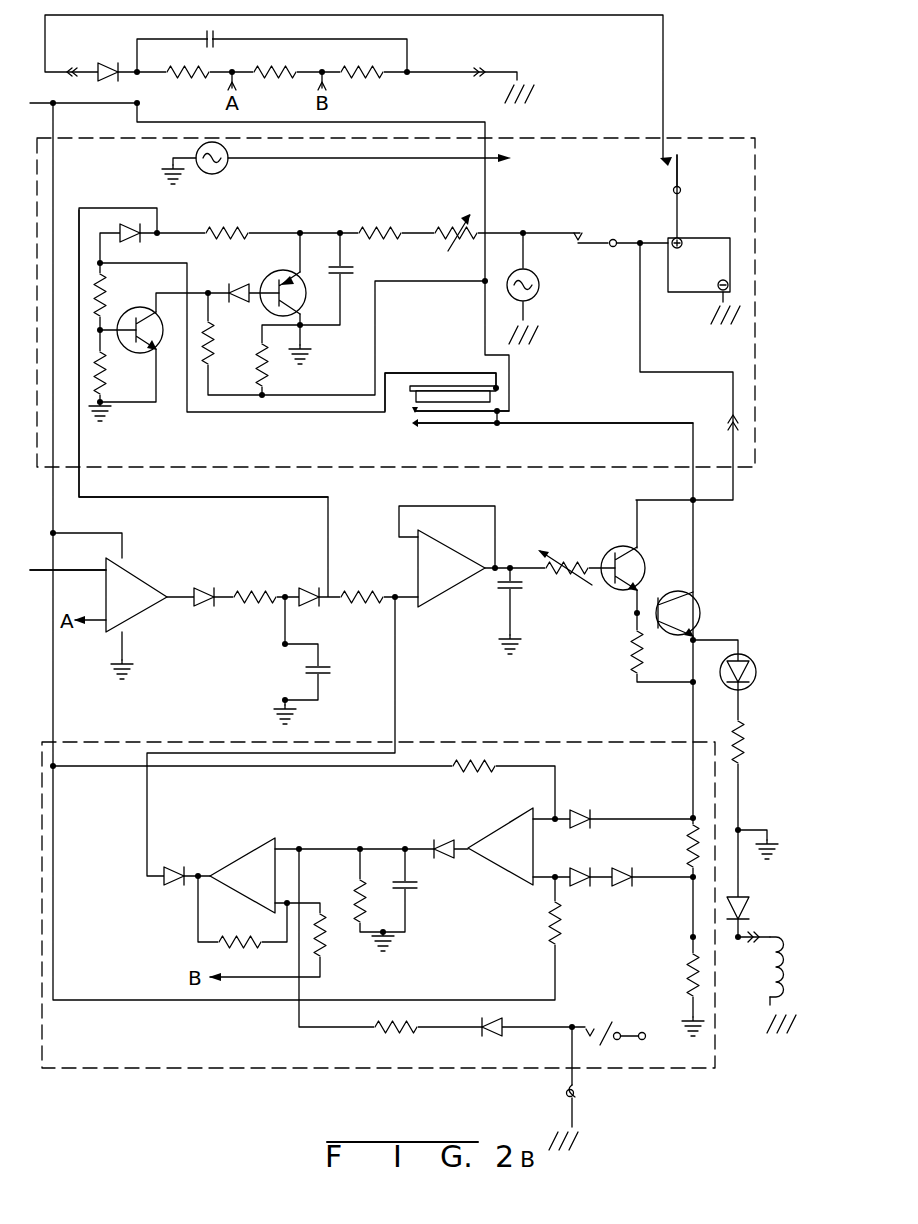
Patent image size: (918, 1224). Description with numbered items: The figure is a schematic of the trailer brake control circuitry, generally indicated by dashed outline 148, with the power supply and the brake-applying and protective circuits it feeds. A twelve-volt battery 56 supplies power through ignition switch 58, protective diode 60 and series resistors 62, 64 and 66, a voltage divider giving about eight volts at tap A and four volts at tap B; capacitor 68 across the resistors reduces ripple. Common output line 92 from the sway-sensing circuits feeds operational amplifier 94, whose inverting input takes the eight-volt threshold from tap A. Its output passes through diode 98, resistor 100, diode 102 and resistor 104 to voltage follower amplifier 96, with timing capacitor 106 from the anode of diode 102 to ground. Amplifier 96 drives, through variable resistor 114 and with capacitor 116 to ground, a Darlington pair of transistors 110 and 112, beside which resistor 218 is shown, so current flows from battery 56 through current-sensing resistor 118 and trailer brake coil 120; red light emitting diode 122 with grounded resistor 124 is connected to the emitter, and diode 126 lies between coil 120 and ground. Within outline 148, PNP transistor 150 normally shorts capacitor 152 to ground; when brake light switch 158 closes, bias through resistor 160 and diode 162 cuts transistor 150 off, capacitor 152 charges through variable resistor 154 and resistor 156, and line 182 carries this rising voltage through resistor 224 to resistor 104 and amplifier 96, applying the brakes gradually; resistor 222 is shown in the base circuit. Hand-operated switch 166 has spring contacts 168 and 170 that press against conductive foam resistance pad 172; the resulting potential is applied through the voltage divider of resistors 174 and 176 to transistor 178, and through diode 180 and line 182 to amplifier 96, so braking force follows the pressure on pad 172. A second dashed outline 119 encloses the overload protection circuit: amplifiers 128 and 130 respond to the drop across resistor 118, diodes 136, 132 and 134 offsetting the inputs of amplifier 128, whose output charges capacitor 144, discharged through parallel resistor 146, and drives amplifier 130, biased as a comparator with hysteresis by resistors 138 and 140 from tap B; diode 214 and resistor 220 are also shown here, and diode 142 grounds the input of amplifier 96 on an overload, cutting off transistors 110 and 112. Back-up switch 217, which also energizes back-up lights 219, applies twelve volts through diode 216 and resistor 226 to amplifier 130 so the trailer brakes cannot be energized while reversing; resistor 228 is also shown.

The battery 56 is at (735, 238).
The ignition switch 58 is at (665, 163).
The diode 60 is at (110, 62).
The resistor 62 is at (184, 64).
The resistor 64 is at (274, 65).
The resistor 66 is at (378, 77).
The capacitor 68 is at (216, 34).
The common output line 92 is at (60, 569).
The operational amplifier 94 is at (130, 613).
The operational amplifier 96 is at (455, 552).
The diode 98 is at (212, 585).
The resistor 100 is at (253, 585).
The diode 102 is at (310, 585).
The resistor 104 is at (362, 586).
The timing capacitor 106 is at (331, 671).
The transistor 110 is at (641, 559).
The transistor 112 is at (690, 595).
The variable resistor 114 is at (563, 563).
The capacitor 116 is at (521, 588).
The current-sensing resistor 118 is at (688, 846).
The control circuit 119 is at (690, 1069).
The braking coil 120 is at (774, 963).
The light emitting diode 122 is at (756, 658).
The resistor 124 is at (733, 733).
The diode 126 is at (755, 908).
The operational amplifier 128 is at (505, 820).
The operational amplifier 130 is at (250, 850).
The diode 132 is at (580, 866).
The diode 134 is at (628, 890).
The diode 136 is at (583, 808).
The resistor 138 is at (323, 948).
The resistor 140 is at (228, 950).
The diode 142 is at (168, 888).
The capacitor 144 is at (420, 886).
The resistor 146 is at (353, 895).
The trailer brake control circuitry 148 is at (737, 134).
The PNP transistor 150 is at (276, 271).
The capacitor 152 is at (355, 270).
The variable resistor 154 is at (448, 226).
The resistor 156 is at (382, 227).
The brake light switch 158 is at (582, 232).
The biasing resistor 160 is at (213, 340).
The diode 162 is at (233, 285).
The hand operated switch 166 is at (437, 366).
The cantilever spring contact 168 is at (455, 424).
The cantilever spring contact 170 is at (413, 407).
The resistance pad 172 is at (450, 395).
The resistor 174 is at (105, 275).
The resistor 176 is at (118, 368).
The transistor 178 is at (128, 305).
The diode 180 is at (140, 206).
The line 182 is at (92, 208).
The diode 214 is at (437, 840).
The diode 216 is at (492, 1040).
The back-up indicator switch 217 is at (618, 1010).
The resistor 218 is at (632, 660).
The back-up lights 219 is at (576, 1093).
The resistor 220 is at (548, 928).
The resistor 222 is at (250, 355).
The resistor 224 is at (218, 228).
The resistor 226 is at (390, 1036).
The resistor 228 is at (688, 972).